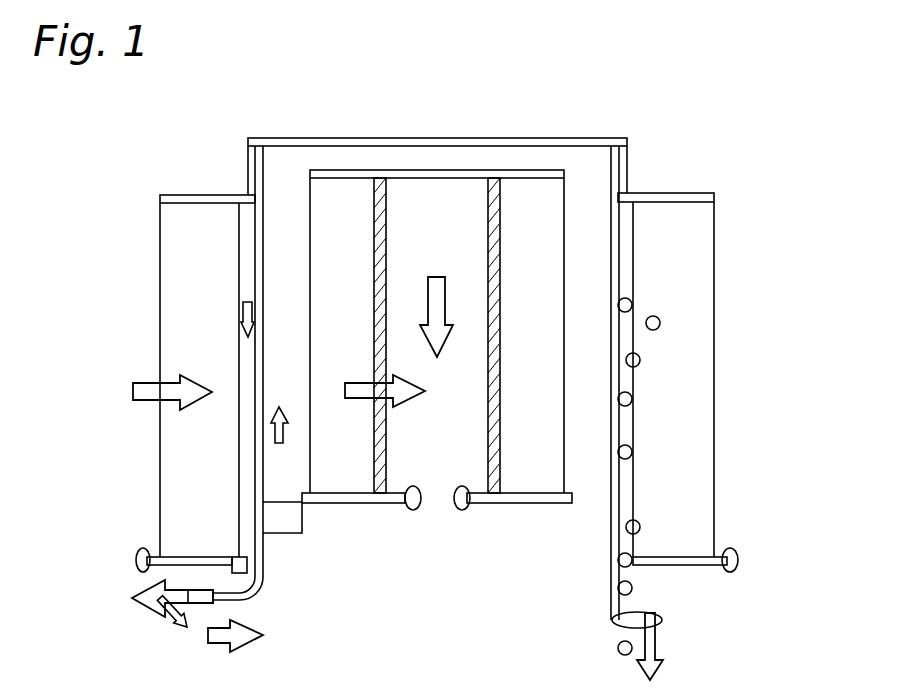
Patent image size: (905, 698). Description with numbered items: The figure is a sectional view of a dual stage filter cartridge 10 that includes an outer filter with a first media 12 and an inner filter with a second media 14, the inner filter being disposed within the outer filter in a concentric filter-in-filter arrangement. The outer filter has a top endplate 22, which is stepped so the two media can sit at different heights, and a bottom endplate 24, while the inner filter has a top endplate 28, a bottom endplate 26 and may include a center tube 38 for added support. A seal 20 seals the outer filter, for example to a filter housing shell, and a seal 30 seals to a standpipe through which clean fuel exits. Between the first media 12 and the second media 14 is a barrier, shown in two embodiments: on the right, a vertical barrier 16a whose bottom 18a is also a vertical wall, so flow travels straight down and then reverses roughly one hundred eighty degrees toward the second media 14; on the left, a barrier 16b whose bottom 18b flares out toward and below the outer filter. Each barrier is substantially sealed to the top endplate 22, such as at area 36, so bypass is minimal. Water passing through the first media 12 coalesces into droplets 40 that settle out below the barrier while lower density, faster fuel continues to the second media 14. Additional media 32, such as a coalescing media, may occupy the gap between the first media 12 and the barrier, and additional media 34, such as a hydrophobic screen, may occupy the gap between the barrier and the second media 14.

The dual stage filter cartridge 10 is at (286, 100).
The first media 12 is at (715, 297).
The second media 14 is at (565, 210).
The barrier 16a is at (635, 272).
The barrier 16b is at (255, 283).
The bottom of barrier 18a is at (620, 605).
The bottom of barrier 18b is at (248, 600).
The seal 20 is at (737, 550).
The top endplate 22 is at (182, 194).
The bottom endplate 24 is at (160, 565).
The bottom endplate 26 is at (340, 503).
The top endplate 28 is at (535, 150).
The seal 30 is at (463, 510).
The additional media 32 is at (247, 560).
The additional media 34 is at (277, 502).
The seal area 36 is at (250, 163).
The center tube 38 is at (500, 288).
The droplets 40 is at (640, 362).